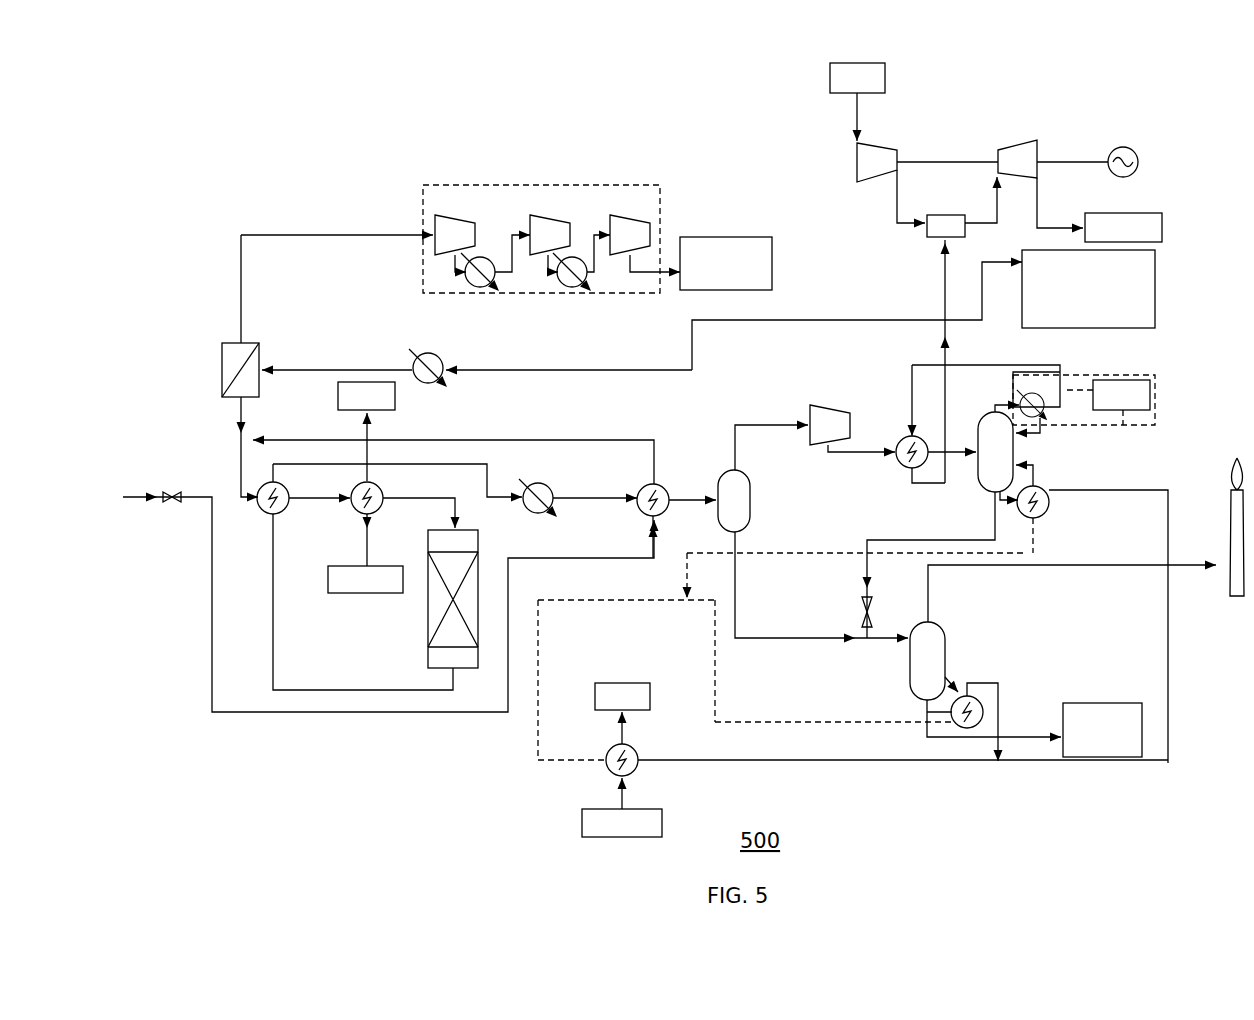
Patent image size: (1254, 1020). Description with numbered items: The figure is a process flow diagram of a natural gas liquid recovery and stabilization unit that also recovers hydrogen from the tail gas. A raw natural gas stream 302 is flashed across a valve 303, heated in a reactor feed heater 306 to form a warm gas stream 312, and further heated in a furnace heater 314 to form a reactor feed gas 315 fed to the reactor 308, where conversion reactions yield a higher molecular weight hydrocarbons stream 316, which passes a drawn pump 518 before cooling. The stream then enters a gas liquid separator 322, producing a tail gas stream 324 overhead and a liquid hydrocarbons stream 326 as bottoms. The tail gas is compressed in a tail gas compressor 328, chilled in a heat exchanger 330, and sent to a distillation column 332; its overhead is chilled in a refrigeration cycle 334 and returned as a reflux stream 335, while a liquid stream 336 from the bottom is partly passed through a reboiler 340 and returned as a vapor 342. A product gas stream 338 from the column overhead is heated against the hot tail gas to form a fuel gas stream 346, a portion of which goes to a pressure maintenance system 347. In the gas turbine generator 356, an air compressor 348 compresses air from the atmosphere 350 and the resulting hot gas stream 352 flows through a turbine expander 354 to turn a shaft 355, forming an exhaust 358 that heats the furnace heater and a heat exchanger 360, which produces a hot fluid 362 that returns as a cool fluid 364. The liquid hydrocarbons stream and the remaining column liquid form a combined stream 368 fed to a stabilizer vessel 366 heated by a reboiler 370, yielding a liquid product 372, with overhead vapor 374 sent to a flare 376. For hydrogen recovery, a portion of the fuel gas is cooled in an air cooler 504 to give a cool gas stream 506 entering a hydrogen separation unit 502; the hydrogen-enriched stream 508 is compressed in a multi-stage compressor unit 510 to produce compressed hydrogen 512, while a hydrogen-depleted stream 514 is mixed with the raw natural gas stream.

The raw natural gas stream 302 is at (135, 495).
The valve 303 is at (178, 492).
The reactor feed heater 306 is at (268, 512).
The reactor 308 is at (428, 630).
The warm gas stream 312 is at (318, 502).
The furnace heater 314 is at (362, 482).
The reactor feed gas 315 is at (412, 498).
The higher molecular weight hydrocarbons stream 316 is at (430, 470).
The gas liquid separator 322 is at (752, 478).
The tail gas stream 324 is at (770, 425).
The liquid hydrocarbons stream 326 is at (760, 610).
The tail gas compressor 328 is at (830, 405).
The heat exchanger 330 is at (898, 468).
The distillation column 332 is at (1015, 456).
The refrigeration cycle 334 is at (1150, 390).
The reflux stream 335 is at (1030, 433).
The liquid stream 336 is at (920, 540).
The product gas stream 338 is at (996, 365).
The reboiler 340 is at (1046, 518).
The vapor 342 is at (1045, 478).
The fuel gas stream 346 is at (760, 320).
The pressure maintenance system 347 is at (1118, 328).
The air compressor 348 is at (877, 140).
The atmosphere 350 is at (338, 398).
The hot gas stream 352 is at (997, 208).
The turbine expander 354 is at (1022, 140).
The shaft 355 is at (935, 160).
The gas turbine generator 356 is at (1136, 152).
The exhaust 358 is at (350, 595).
The heat exchanger 360 is at (638, 775).
The hot fluid 362 is at (765, 553).
The cool fluid 364 is at (760, 760).
The stabilizer vessel 366 is at (948, 626).
The combined stream 368 is at (873, 635).
The reboiler 370 is at (990, 700).
The liquid product 372 is at (1105, 703).
The overhead vapor 374 is at (1085, 565).
The flare 376 is at (1234, 598).
The hydrogen separation unit 502 is at (238, 343).
The air cooler 504 is at (436, 350).
The cool gas stream 506 is at (335, 368).
The hydrogen-enriched stream 508 is at (320, 235).
The multi-stage compressor unit 510 is at (607, 185).
The compressed hydrogen 512 is at (722, 237).
The hydrogen-depleted stream 514 is at (238, 410).
The pump 518 is at (548, 482).